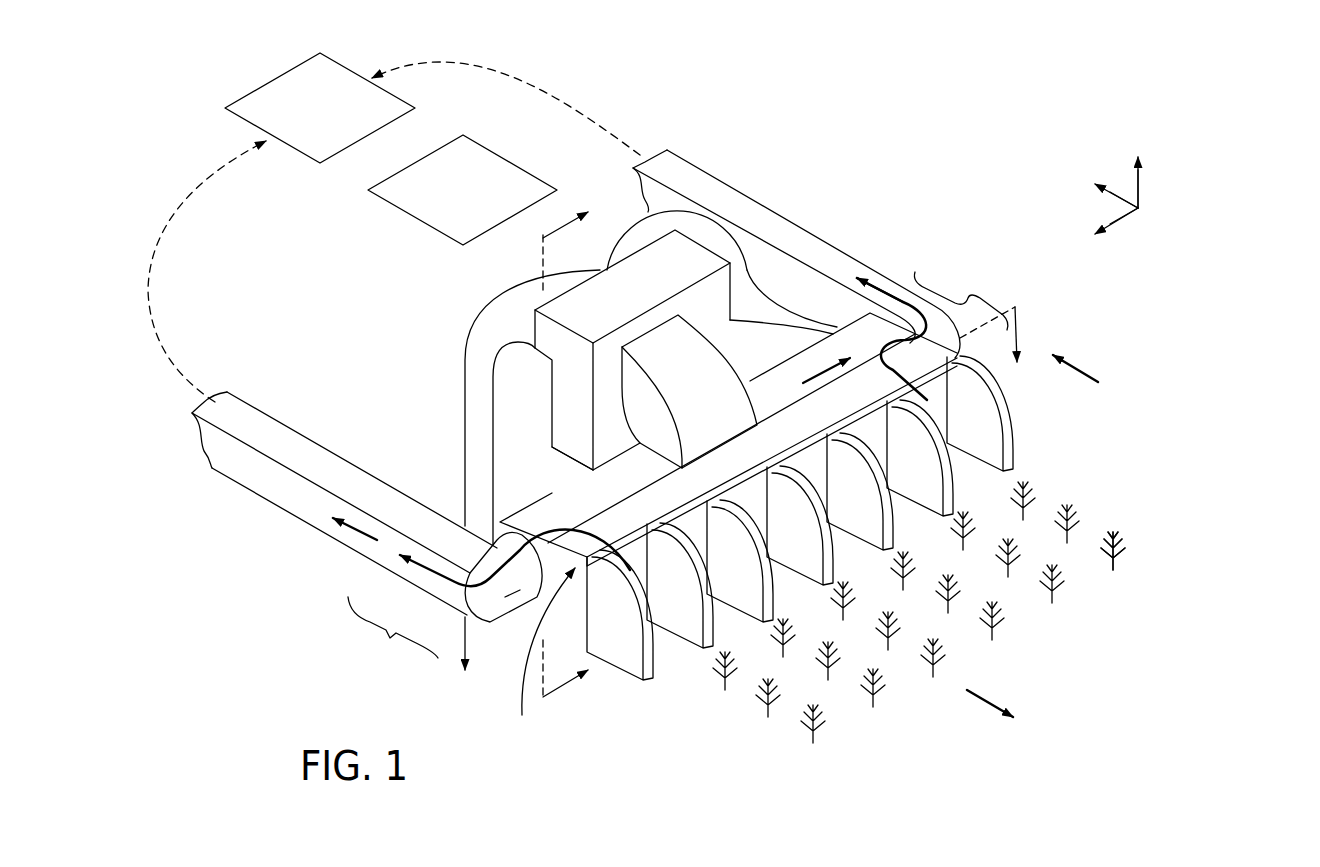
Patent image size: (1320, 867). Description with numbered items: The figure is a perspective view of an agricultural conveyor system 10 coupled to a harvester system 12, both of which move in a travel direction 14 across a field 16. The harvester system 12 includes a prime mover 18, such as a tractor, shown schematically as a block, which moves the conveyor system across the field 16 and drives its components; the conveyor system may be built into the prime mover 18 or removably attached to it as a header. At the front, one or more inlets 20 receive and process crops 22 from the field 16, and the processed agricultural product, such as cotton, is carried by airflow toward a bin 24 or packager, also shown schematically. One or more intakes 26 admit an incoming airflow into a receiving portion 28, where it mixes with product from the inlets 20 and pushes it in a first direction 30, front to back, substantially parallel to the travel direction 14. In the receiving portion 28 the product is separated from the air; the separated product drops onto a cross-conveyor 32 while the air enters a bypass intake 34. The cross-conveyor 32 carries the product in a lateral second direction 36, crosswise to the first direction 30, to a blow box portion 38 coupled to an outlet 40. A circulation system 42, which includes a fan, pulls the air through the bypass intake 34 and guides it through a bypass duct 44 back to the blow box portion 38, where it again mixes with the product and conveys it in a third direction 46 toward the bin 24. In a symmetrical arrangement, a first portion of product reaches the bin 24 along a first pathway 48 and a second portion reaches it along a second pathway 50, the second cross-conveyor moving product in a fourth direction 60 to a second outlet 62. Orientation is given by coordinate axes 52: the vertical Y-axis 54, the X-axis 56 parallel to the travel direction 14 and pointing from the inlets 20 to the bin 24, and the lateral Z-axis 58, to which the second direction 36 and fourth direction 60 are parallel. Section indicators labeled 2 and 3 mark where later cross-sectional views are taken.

The agricultural conveyor system 10 is at (836, 212).
The harvester system 12 is at (652, 52).
The travel direction 14 is at (990, 697).
The field 16 is at (1128, 508).
The prime mover 18 is at (510, 163).
The inlets 20 is at (688, 668).
The crops 22 is at (1114, 570).
The bin 24 is at (273, 82).
The intakes 26 is at (992, 385).
The receiving portion 28 is at (542, 655).
The first direction 30 is at (1088, 366).
The cross-conveyor 32 is at (530, 590).
The bypass intake 34 is at (672, 448).
The second direction 36 is at (582, 478).
The blow box portion 38 is at (678, 467).
The outlet 40 is at (282, 492).
The circulation system 42 is at (718, 342).
The bypass duct 44 is at (638, 232).
The third direction 46 is at (362, 523).
The first pathway 48 is at (610, 597).
The second pathway 50 is at (880, 289).
The coordinate axes 52 is at (1160, 194).
The Y-axis 54 is at (1143, 187).
The X-axis 56 is at (1122, 197).
The Z-axis 58 is at (1123, 218).
The fourth direction 60 is at (822, 376).
The second outlet 62 is at (740, 202).
The section line 2 is at (569, 460).
The section line 3 is at (751, 500).